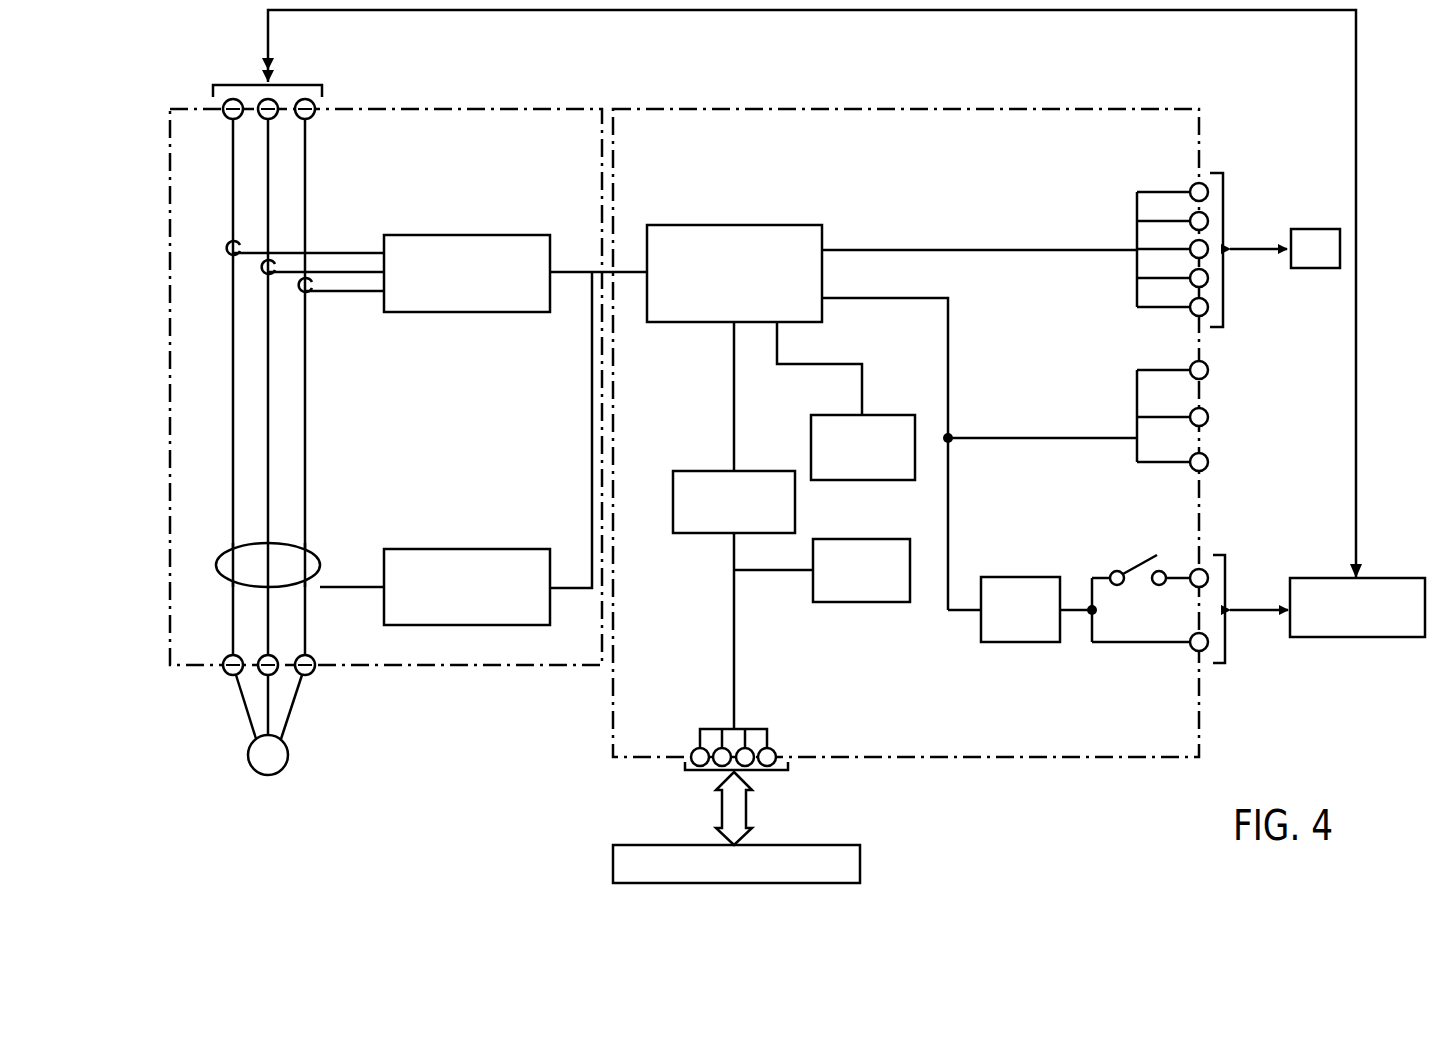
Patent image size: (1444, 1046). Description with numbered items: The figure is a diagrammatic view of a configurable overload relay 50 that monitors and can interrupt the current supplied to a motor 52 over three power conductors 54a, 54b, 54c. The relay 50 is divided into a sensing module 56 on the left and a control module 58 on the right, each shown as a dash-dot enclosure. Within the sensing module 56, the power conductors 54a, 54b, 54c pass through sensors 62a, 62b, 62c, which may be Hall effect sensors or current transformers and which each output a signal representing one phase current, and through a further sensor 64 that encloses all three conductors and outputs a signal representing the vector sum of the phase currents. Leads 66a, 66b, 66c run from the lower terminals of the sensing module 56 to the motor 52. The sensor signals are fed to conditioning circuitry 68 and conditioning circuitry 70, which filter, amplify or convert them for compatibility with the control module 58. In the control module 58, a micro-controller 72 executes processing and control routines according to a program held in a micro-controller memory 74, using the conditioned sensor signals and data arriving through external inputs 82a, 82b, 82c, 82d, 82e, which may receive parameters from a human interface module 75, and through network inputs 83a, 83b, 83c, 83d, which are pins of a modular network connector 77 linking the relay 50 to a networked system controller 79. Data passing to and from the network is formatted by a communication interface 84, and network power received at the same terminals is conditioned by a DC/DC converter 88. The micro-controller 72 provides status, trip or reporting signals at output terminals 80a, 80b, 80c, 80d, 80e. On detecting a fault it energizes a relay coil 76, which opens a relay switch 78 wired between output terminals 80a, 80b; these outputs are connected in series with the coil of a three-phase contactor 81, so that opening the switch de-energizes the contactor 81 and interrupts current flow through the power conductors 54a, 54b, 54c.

The configurable overload relay 50 is at (966, 80).
The motor 52 is at (268, 776).
The power conductor 54a is at (231, 133).
The power conductor 54b is at (270, 139).
The power conductor 54c is at (306, 168).
The sensing module 56 is at (437, 109).
The control module 58 is at (768, 109).
The sensor 62a is at (228, 245).
The sensor 62b is at (262, 265).
The sensor 62c is at (302, 292).
The sensor 64 is at (318, 560).
The motor lead 66a is at (245, 703).
The motor lead 66b is at (266, 700).
The motor lead 66c is at (298, 704).
The conditioning circuitry 68 is at (470, 235).
The conditioning circuitry 70 is at (472, 549).
The micro-controller 72 is at (735, 225).
The micro-controller memory 74 is at (811, 440).
The human interface module 75 is at (1305, 229).
The relay coil 76 is at (995, 577).
The modular network connector 77 is at (790, 770).
The relay switch 78 is at (1135, 560).
The system controller 79 is at (860, 858).
The output terminal 80a is at (1210, 578).
The output terminal 80b is at (1210, 642).
The output terminal 80c is at (1210, 370).
The output terminal 80d is at (1210, 417).
The output terminal 80e is at (1210, 462).
The contactor 81 is at (1375, 578).
The external input 82a is at (1205, 185).
The external input 82b is at (1206, 216).
The external input 82c is at (1206, 245).
The external input 82d is at (1206, 283).
The external input 82e is at (1206, 312).
The network input 83a is at (696, 768).
The network input 83b is at (720, 768).
The network input 83c is at (750, 768).
The network input 83d is at (772, 768).
The communication interface 84 is at (700, 471).
The DC/DC converter 88 is at (865, 539).